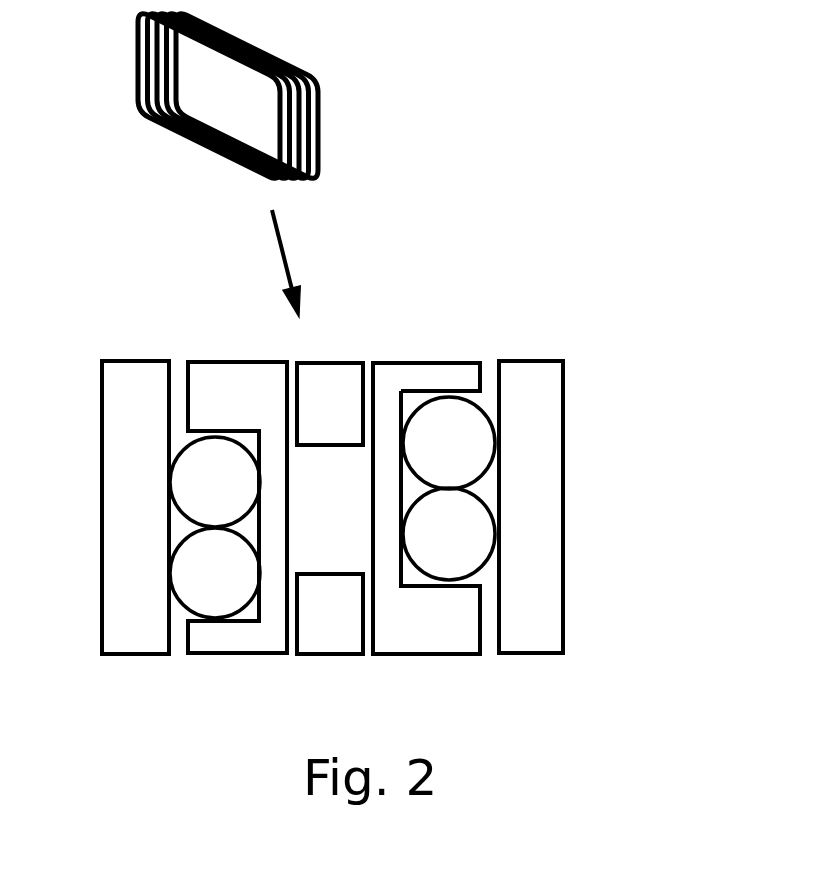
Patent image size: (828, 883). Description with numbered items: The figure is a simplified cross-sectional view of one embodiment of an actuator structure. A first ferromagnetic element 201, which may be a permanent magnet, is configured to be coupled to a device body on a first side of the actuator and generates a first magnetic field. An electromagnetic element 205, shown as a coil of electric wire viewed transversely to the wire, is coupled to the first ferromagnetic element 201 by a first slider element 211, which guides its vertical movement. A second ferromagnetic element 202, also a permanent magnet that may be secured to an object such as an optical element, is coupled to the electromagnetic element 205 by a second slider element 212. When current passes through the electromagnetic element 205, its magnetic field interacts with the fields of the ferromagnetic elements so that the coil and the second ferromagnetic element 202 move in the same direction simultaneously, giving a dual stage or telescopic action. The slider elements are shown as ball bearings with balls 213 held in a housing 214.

The first ferromagnetic element 201 is at (135, 388).
The second ferromagnetic element 202 is at (535, 470).
The electromagnetic element 205 is at (292, 187).
The first slider element 211 is at (253, 635).
The second slider element 212 is at (438, 639).
The balls 213 is at (465, 530).
The housing 214 is at (442, 365).